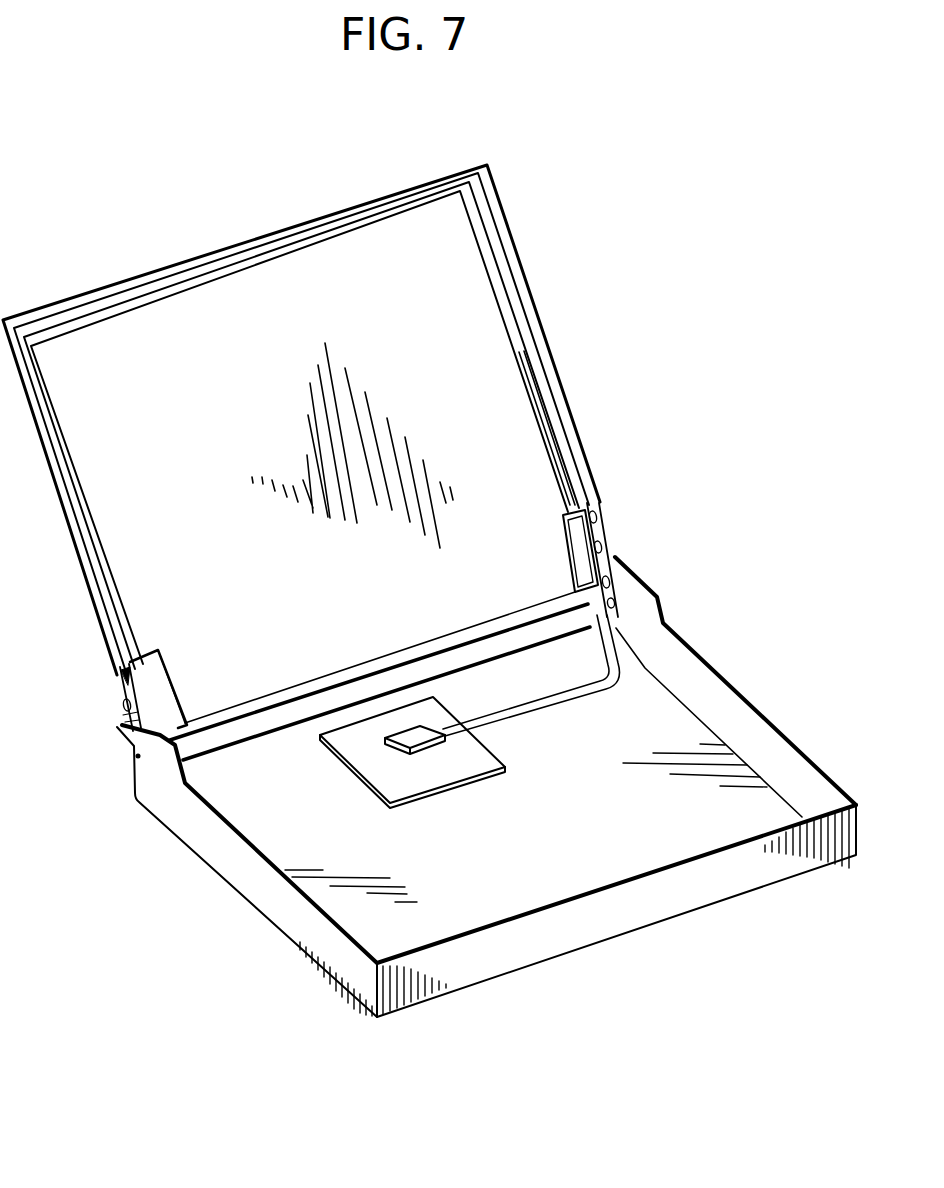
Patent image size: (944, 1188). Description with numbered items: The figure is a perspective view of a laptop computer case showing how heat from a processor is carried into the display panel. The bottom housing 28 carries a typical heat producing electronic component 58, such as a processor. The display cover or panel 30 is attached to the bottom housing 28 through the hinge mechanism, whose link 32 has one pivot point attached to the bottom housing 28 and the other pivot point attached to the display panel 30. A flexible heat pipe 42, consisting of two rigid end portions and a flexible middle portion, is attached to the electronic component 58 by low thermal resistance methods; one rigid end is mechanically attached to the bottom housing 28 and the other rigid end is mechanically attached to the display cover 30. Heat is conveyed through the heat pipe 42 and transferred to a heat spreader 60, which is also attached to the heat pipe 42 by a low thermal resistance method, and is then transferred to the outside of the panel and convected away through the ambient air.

The bottom housing 28 is at (782, 733).
The display cover or panel 30 is at (560, 355).
The link 32 is at (610, 555).
The heat pipe 42 is at (630, 675).
The heat producing electronic component 58 is at (357, 780).
The heat spreader 60 is at (465, 265).